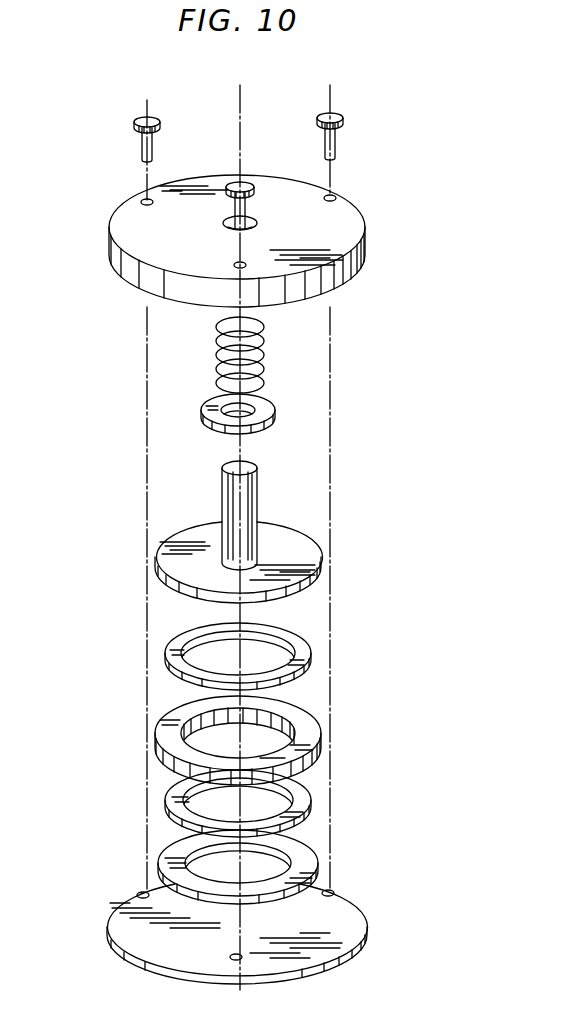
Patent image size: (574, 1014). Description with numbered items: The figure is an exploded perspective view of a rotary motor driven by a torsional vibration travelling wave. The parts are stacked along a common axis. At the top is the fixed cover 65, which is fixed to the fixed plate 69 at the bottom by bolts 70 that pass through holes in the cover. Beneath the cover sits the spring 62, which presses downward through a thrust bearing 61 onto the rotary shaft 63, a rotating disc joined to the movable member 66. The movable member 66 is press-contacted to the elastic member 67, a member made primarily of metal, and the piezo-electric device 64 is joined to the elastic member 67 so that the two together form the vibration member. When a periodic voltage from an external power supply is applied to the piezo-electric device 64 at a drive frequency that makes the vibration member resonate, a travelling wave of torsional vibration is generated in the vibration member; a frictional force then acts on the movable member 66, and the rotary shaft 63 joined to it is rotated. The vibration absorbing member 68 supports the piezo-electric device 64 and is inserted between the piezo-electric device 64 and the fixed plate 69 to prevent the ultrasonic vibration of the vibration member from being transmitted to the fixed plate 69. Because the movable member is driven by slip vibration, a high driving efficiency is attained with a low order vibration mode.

The bolts 70 is at (153, 118).
The fixed cover 65 is at (360, 217).
The spring 62 is at (262, 355).
The thrust bearing 61 is at (270, 412).
The rotary shaft 63 is at (300, 546).
The movable member 66 is at (309, 650).
The elastic member 67 is at (314, 736).
The piezo-electric device 64 is at (308, 795).
The vibration absorbing member 68 is at (308, 862).
The fixed plate 69 is at (357, 922).